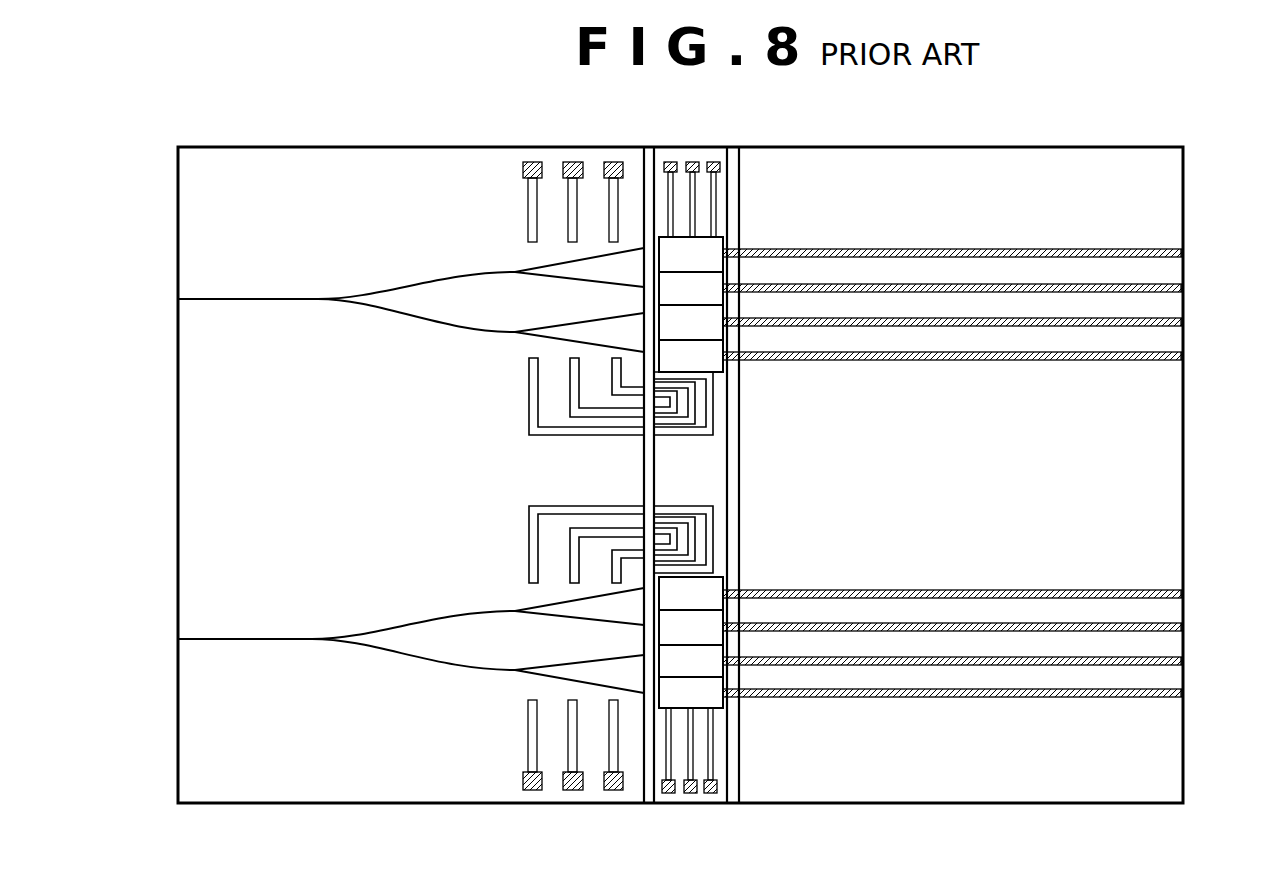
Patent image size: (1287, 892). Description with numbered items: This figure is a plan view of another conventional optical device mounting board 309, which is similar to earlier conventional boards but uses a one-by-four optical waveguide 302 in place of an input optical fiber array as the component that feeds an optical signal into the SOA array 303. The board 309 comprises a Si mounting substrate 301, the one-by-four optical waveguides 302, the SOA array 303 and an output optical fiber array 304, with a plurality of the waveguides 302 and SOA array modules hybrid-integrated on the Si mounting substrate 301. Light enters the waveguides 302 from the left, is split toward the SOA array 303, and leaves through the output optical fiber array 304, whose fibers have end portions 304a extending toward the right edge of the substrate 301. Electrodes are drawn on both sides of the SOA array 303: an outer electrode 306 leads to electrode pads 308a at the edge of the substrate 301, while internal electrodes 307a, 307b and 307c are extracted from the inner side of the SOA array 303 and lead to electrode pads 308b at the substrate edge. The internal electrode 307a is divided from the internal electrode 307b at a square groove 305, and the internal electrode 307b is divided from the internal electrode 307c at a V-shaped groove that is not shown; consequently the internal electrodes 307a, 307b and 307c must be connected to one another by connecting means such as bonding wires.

The Si mounting substrate 301 is at (1025, 778).
The 1×4 optical waveguide 302 is at (342, 292).
The SOA array 303 is at (710, 249).
The output optical fiber array 304 is at (1200, 237).
The output waveguide end portions 304a is at (1040, 361).
The square groove 305 is at (648, 803).
The signal electrode lead lines 306 is at (718, 193).
The internal electrode 307a is at (713, 506).
The internal electrode 307b is at (538, 506).
The internal electrode 307c is at (528, 198).
The right bonding pads 308a is at (689, 160).
The left bonding pads 308b is at (573, 160).
The optical device mounting board 309 is at (1068, 128).